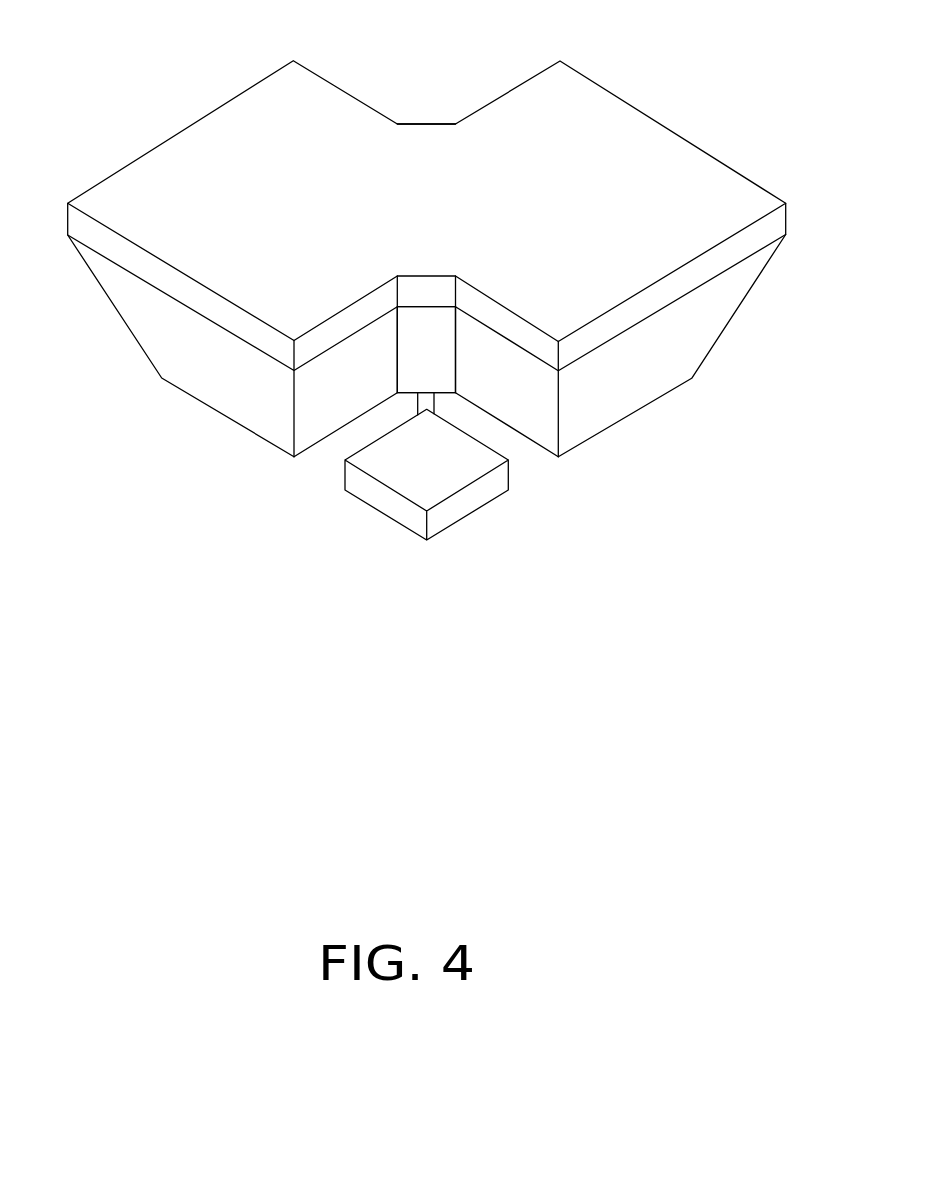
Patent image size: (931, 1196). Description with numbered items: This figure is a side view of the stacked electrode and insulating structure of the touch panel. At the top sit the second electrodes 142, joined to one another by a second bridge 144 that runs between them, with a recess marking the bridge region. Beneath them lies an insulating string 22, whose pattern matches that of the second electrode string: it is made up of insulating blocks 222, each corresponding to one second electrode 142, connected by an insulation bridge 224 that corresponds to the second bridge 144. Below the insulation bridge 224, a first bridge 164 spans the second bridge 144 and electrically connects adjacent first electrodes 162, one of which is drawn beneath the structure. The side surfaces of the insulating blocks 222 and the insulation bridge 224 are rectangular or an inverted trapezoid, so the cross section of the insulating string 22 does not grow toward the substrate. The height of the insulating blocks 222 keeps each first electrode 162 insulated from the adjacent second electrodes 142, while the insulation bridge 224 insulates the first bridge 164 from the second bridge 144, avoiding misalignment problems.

The second electrode 142 is at (150, 178).
The second bridge 144 is at (422, 182).
The insulating string 22 is at (296, 540).
The insulating block 222 is at (239, 403).
The insulation bridge 224 is at (419, 363).
The first bridge 164 is at (430, 403).
The first electrode 162 is at (407, 483).